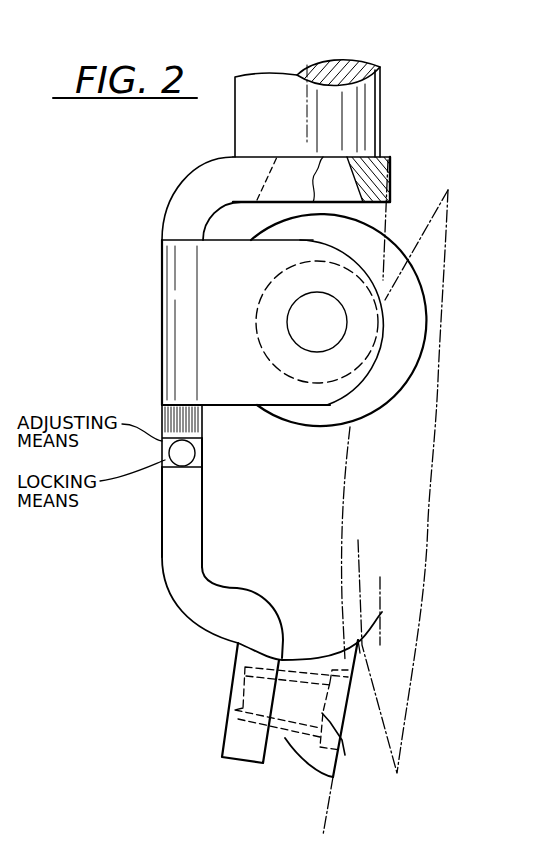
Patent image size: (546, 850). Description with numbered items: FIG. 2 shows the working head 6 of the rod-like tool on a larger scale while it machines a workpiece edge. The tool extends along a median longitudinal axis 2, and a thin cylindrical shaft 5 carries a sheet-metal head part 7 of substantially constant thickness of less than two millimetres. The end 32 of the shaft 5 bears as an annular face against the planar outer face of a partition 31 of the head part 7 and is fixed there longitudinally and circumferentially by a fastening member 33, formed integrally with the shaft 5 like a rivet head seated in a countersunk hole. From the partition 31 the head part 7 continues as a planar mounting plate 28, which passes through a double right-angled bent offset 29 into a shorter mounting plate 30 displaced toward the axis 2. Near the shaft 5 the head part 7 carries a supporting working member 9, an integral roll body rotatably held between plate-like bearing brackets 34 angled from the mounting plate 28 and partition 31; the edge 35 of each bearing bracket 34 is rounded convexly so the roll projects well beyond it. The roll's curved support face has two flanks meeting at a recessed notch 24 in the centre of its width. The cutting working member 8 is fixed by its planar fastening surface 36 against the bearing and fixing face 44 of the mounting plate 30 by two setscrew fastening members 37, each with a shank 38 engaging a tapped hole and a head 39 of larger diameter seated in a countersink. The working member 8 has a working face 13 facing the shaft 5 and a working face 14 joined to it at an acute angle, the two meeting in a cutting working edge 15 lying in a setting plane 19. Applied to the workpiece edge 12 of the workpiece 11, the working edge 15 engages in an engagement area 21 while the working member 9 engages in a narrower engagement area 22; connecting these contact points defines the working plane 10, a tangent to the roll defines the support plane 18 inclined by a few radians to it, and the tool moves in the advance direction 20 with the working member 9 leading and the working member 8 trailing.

The median longitudinal axis 2 is at (305, 109).
The shaft 5 is at (380, 67).
The partition 31 is at (390, 158).
The end of the shaft 32 is at (228, 160).
The fastening member 33 is at (257, 185).
The head part 7 is at (162, 407).
The bearing brackets 34 is at (253, 397).
The edge of the bearing bracket 35 is at (388, 305).
The recessed notch 24 is at (258, 332).
The engagement area 22 is at (377, 360).
The working member 9 is at (404, 230).
The workpiece 11 is at (428, 462).
The workpiece edge 12 is at (341, 490).
The working plane 10 is at (362, 550).
The support plane 18 is at (380, 577).
The advance direction 20 is at (323, 512).
The engagement area 21 is at (354, 617).
The mounting plate 28 is at (188, 485).
The offset 29 is at (233, 588).
The fastening surface 36 is at (238, 643).
The working edge 15 is at (382, 612).
The working face 13 is at (340, 655).
The working face 14 is at (362, 655).
The setting plane 19 is at (328, 803).
The working head 6 is at (162, 622).
The mounting plate 30 is at (232, 727).
The fastening members 37 is at (227, 683).
The bearing and fixing face 44 is at (280, 658).
The head 39 is at (341, 745).
The shank 38 is at (285, 738).
The working member 8 is at (282, 775).